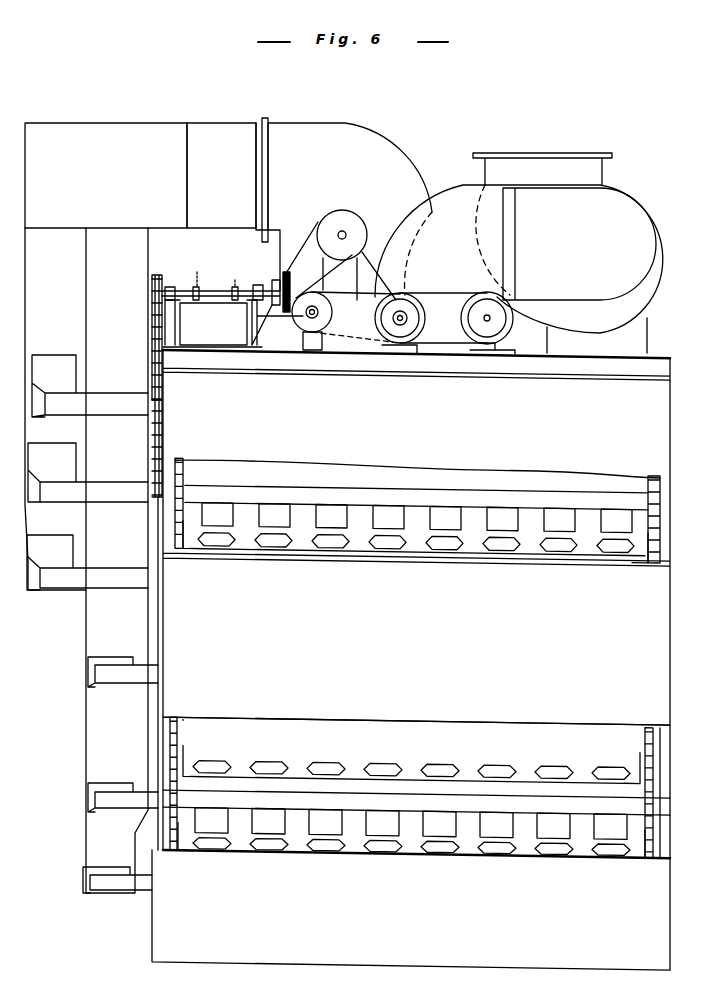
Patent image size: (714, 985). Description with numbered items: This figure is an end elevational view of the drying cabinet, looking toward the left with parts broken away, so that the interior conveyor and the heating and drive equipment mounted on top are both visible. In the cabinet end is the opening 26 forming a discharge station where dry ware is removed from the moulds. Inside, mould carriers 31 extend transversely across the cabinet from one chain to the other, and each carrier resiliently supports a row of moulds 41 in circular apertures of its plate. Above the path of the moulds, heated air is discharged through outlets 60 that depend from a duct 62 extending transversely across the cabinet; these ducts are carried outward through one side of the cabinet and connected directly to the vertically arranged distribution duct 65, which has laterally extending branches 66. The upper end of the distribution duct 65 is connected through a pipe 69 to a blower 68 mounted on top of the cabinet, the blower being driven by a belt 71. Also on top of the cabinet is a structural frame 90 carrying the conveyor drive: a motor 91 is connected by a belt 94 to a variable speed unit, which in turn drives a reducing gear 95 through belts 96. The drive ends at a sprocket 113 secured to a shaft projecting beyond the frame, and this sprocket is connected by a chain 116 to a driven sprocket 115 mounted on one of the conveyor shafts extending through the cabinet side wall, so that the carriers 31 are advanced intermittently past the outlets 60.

The opening 26 is at (416, 736).
The mould carriers 31 is at (352, 548).
The mould 41 is at (390, 542).
The outlets 60 is at (413, 671).
The duct 62 is at (355, 492).
The distribution duct 65 is at (106, 175).
The laterally extending branches 66 is at (91, 560).
The blower 68 is at (350, 209).
The pipe 69 is at (233, 204).
The belt 71 is at (283, 278).
The structural frame 90 is at (233, 323).
The motor 91 is at (461, 322).
The belt 94 is at (450, 292).
The reducing gear 95 is at (316, 350).
The belts 96 is at (392, 291).
The sprocket 113 is at (162, 283).
The driven sprocket 115 is at (163, 452).
The chain 116 is at (163, 380).